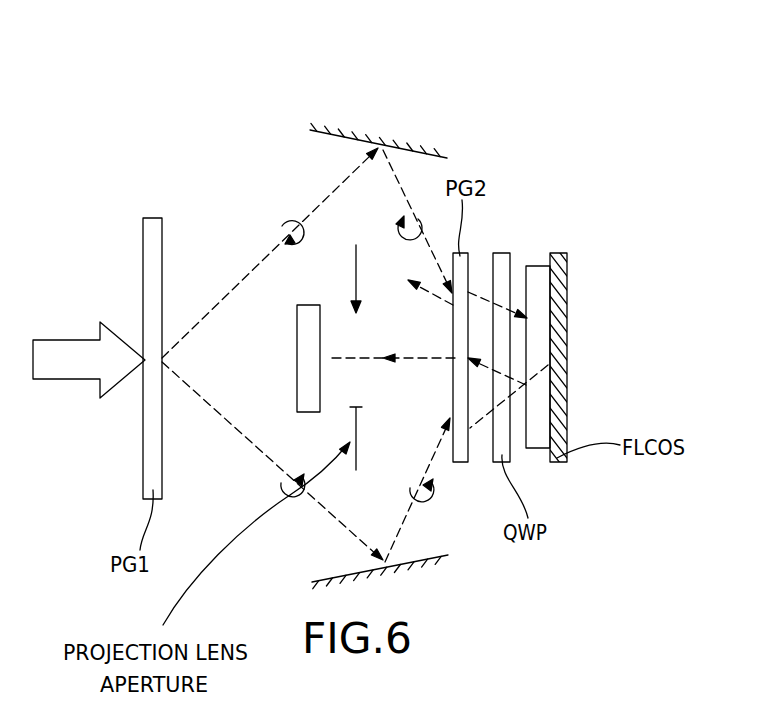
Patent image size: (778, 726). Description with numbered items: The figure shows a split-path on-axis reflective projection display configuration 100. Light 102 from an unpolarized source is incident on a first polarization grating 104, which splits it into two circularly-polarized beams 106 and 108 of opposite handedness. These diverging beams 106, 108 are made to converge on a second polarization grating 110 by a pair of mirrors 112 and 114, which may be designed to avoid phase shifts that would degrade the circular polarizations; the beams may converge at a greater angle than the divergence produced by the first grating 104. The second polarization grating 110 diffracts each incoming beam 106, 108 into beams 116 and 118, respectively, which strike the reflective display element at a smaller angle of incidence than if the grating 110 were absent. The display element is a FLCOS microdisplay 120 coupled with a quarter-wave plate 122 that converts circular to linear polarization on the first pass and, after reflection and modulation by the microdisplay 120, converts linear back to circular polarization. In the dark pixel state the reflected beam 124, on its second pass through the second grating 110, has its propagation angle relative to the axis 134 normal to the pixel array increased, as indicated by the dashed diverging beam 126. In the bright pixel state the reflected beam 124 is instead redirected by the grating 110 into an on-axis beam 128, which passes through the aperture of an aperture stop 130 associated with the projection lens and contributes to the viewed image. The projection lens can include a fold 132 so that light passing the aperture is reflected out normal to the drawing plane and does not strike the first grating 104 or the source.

The configuration 100 is at (207, 165).
The light 102 is at (75, 375).
The first polarization grating 104 is at (153, 235).
The circularly-polarized beam 106 is at (226, 292).
The circularly-polarized beam 108 is at (230, 428).
The second polarization grating 110 is at (460, 433).
The mirror 112 is at (340, 140).
The mirror 114 is at (340, 577).
The diffracted beam 116 is at (477, 295).
The diffracted beam 118 is at (484, 412).
The FLCOS microdisplay 120 is at (542, 268).
The quarter-wave plate 122 is at (507, 435).
The reflected beam 124 is at (528, 378).
The diverging beam 126 is at (433, 313).
The on-axis beam 128 is at (398, 363).
The aperture stop 130 is at (358, 320).
The fold 132 is at (302, 377).
The axis 134 is at (333, 360).